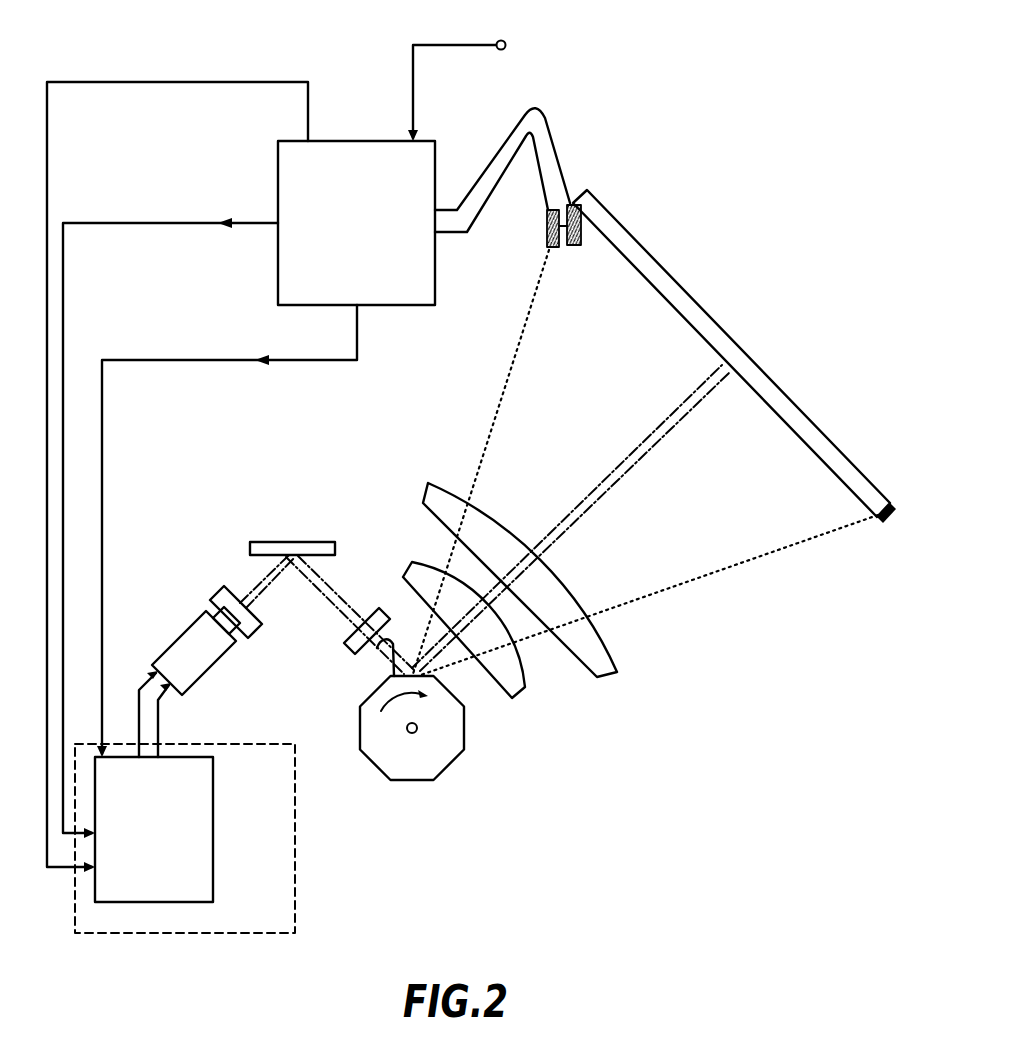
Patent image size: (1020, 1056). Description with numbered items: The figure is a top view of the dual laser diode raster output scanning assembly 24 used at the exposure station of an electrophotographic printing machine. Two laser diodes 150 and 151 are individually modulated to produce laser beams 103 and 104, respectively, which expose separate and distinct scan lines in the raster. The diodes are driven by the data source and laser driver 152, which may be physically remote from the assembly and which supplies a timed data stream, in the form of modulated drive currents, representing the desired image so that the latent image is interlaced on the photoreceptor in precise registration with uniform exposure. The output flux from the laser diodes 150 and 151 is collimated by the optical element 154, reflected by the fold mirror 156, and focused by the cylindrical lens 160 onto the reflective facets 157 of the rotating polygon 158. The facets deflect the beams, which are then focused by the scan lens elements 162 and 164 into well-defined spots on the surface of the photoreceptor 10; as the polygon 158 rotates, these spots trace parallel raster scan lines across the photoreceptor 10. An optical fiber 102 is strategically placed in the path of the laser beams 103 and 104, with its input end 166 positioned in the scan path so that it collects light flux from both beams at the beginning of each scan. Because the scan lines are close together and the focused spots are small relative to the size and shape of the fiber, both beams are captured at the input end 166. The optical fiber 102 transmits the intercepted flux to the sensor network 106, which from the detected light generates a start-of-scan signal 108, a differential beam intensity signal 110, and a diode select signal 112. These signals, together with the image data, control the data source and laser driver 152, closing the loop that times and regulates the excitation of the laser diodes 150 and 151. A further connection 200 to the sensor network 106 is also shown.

The photoreceptor 10 is at (700, 316).
The raster output scanning assembly 24 is at (628, 796).
The optical fiber 102 is at (483, 168).
The laser beam 103 is at (248, 590).
The laser beam 104 is at (275, 582).
The sensor network 106 is at (368, 140).
The start-of-scan signal 108 is at (322, 360).
The differential beam intensity signal 110 is at (252, 227).
The diode select signal 112 is at (283, 82).
The laser diode 150 is at (173, 652).
The laser diode 151 is at (202, 668).
The data source and laser driver 152 is at (207, 900).
The optical element 154 is at (222, 592).
The fold mirror 156 is at (315, 542).
The reflective facets 157 is at (375, 652).
The rotating polygon 158 is at (450, 754).
The cylindrical lens 160 is at (345, 645).
The scan lens element 162 is at (517, 689).
The scan lens element 164 is at (607, 673).
The input end 166 is at (547, 232).
The sensor network connection 200 is at (470, 48).